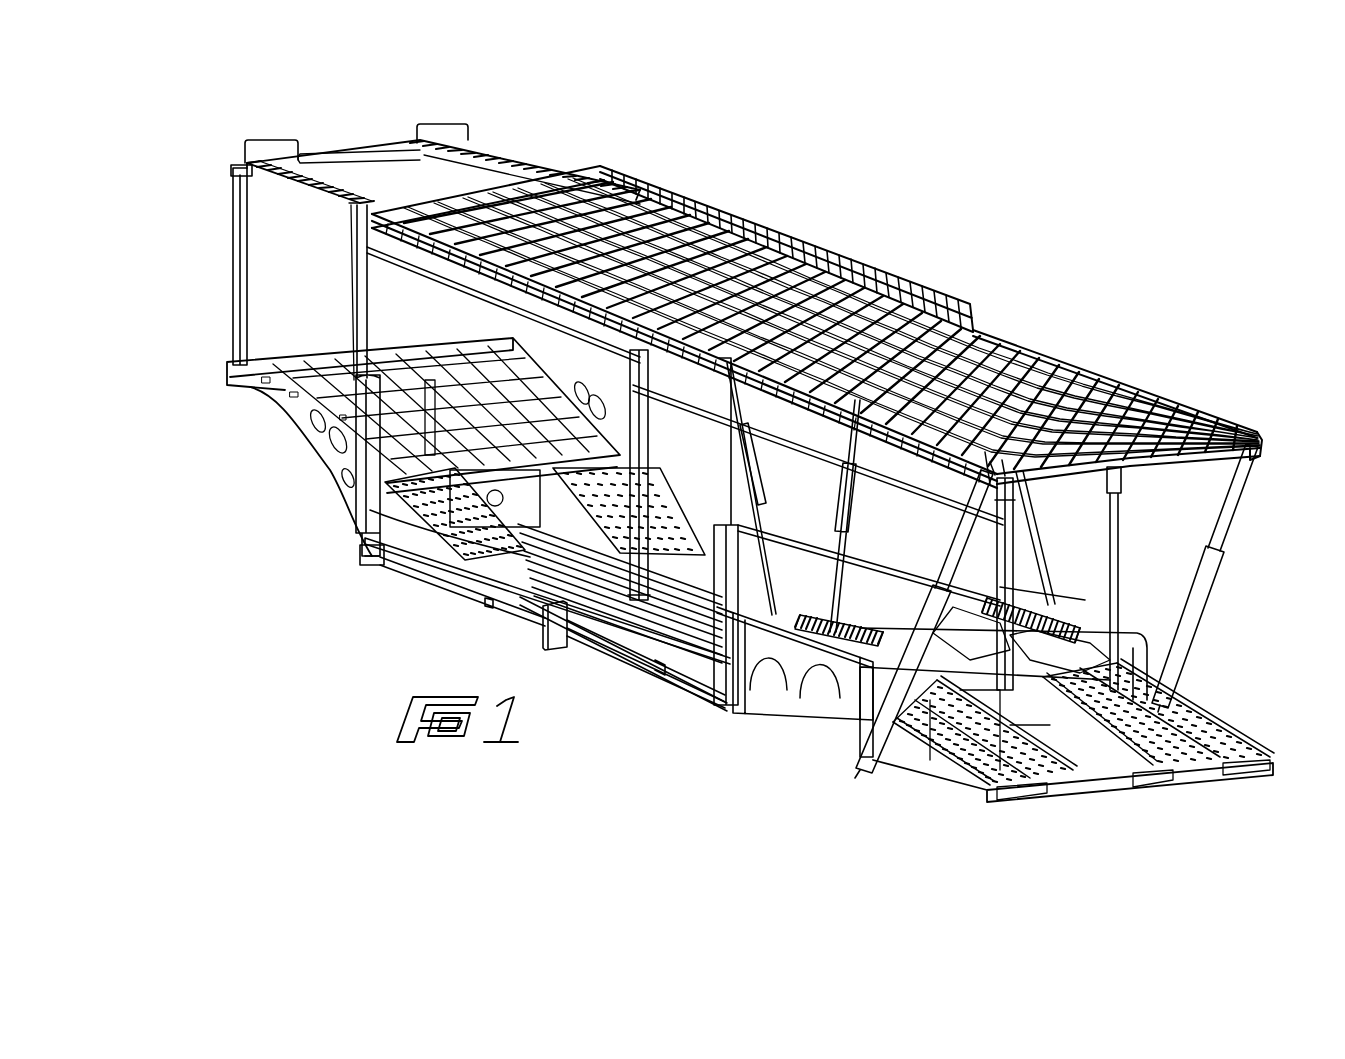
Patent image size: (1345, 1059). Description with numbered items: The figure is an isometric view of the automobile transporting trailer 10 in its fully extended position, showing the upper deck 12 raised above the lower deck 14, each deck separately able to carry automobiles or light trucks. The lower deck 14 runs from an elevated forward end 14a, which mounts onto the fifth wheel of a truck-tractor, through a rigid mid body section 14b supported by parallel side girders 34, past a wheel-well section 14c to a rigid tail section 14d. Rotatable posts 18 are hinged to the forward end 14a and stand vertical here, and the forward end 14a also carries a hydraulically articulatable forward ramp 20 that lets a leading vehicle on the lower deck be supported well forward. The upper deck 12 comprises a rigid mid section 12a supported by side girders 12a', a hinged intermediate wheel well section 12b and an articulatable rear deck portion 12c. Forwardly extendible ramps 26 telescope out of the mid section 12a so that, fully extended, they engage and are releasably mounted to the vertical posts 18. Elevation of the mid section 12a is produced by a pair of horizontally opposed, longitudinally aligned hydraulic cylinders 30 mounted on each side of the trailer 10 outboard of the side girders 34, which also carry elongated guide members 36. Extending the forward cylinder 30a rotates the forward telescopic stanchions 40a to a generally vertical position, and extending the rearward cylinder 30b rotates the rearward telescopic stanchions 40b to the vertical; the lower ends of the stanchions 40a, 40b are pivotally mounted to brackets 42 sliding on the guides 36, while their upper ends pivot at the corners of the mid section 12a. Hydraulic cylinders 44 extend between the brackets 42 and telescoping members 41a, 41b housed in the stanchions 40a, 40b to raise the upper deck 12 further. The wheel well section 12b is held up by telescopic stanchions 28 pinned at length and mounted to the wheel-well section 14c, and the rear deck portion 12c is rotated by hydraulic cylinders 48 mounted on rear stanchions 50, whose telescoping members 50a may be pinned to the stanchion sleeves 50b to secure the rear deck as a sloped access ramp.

The automobile transporting trailer 10 is at (905, 198).
The upper deck 12 is at (860, 300).
The rigid mid section 12a is at (685, 351).
The side girders 12a' is at (685, 386).
The hinged intermediate wheel well section 12b is at (1040, 362).
The articulatable rear deck portion 12c is at (1172, 420).
The lower deck 14 is at (632, 645).
The elevated forward end 14a is at (335, 355).
The rigid mid body section 14b is at (442, 583).
The wheel-well section 14c is at (825, 715).
The rigid tail section 14d is at (955, 755).
The rotatable posts 18 is at (238, 245).
The hydraulically articulatable forward ramp 20 is at (428, 380).
The forwardly extendible ramps 26 is at (497, 152).
The telescopic stanchions 28 is at (755, 462).
The hydraulic cylinders 30 is at (575, 652).
The forward cylinder 30a is at (520, 603).
The rearward cylinder 30b is at (640, 652).
The side girders 34 is at (875, 578).
The elongated guide members 36 is at (437, 593).
The forward telescopic stanchions 40a is at (345, 385).
The rearward telescopic stanchions 40b is at (745, 545).
The telescoping member 41a is at (352, 275).
The telescoping member 41b is at (732, 443).
The brackets 42 is at (360, 568).
The hydraulic cylinders 44 is at (360, 470).
The hydraulic cylinders 48 is at (912, 635).
The rear stanchions 50 is at (1230, 572).
The telescoping members 50a is at (1180, 663).
The stanchion sleeves 50b is at (1240, 503).